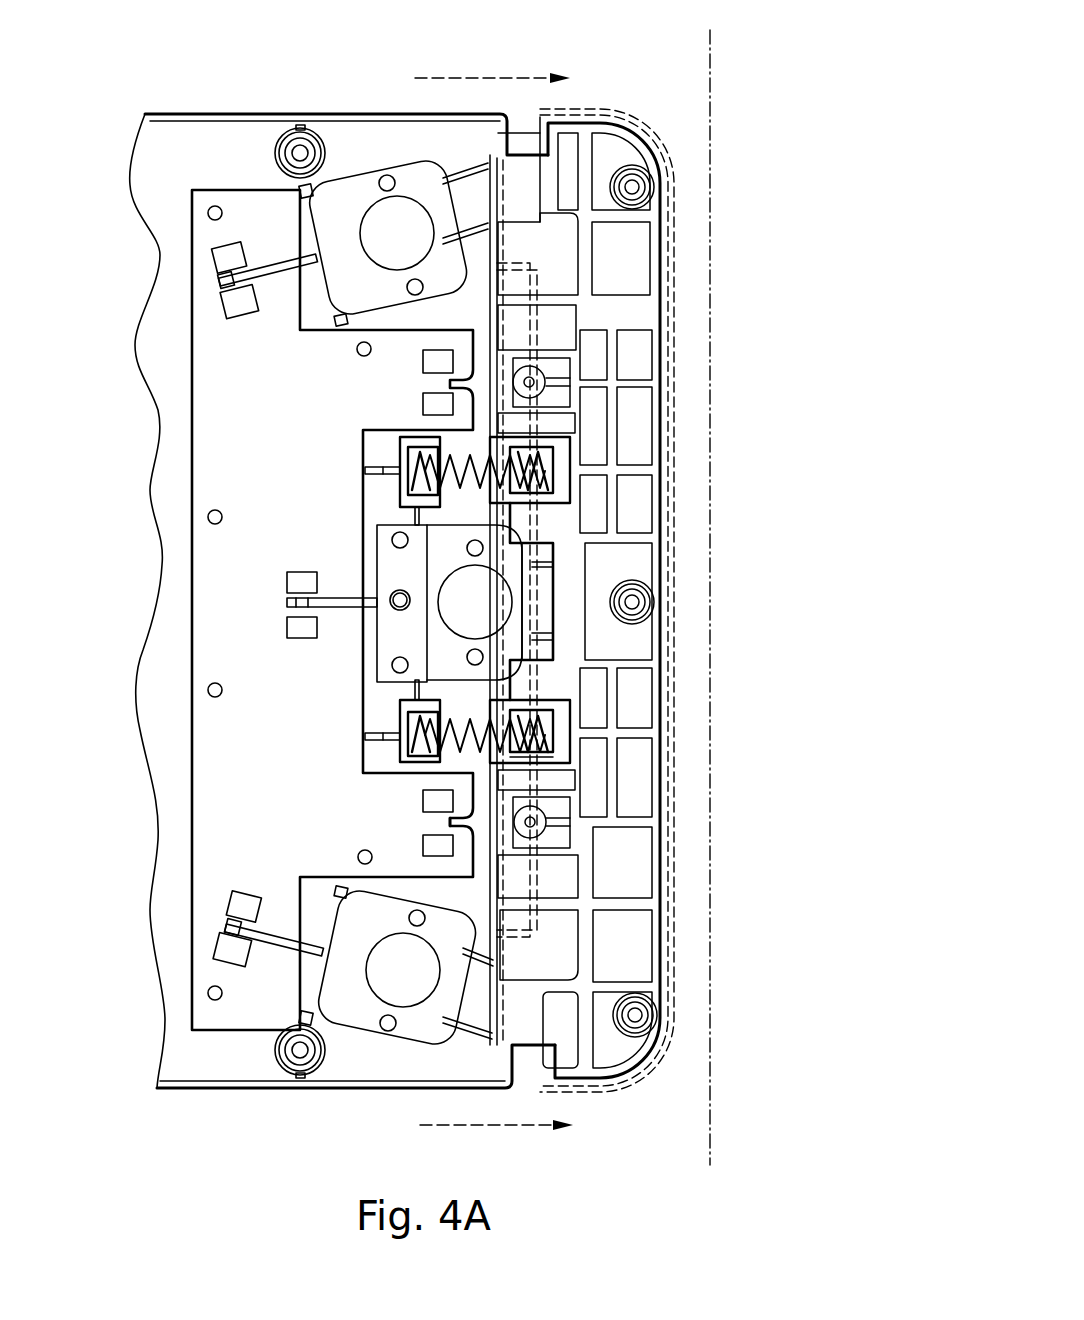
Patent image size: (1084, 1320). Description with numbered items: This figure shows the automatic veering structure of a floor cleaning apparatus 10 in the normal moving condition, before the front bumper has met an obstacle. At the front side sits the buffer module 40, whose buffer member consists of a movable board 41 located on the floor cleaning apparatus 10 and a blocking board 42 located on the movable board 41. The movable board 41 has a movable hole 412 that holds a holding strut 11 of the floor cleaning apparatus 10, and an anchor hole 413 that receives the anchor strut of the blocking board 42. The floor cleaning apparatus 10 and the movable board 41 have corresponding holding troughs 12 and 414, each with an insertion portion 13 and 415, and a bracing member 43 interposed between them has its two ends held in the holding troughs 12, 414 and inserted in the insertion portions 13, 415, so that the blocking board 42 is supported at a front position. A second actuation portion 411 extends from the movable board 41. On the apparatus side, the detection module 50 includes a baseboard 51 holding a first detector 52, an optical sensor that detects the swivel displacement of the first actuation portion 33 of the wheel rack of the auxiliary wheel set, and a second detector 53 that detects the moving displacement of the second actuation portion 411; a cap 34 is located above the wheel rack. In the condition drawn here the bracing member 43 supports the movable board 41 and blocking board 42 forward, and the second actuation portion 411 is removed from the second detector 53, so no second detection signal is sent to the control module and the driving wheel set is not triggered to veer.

The floor cleaning apparatus 10 is at (188, 106).
The holding strut 11 is at (540, 397).
The holding trough 12 is at (406, 712).
The insertion portion 13 is at (393, 748).
The first actuation portion 33 is at (268, 240).
The cap 34 is at (356, 183).
The buffer module 40 is at (772, 508).
The movable board 41 is at (655, 633).
The blocking board 42 is at (672, 524).
The bracing member 43 is at (562, 737).
The detection module 50 is at (178, 433).
The baseboard 51 is at (210, 557).
The first detector 52 is at (288, 624).
The second detector 53 is at (424, 845).
The second actuation portion 411 is at (452, 822).
The movable hole 412 is at (558, 364).
The anchor hole 413 is at (632, 188).
The holding trough 414 is at (548, 760).
The insertion portion 415 is at (553, 728).